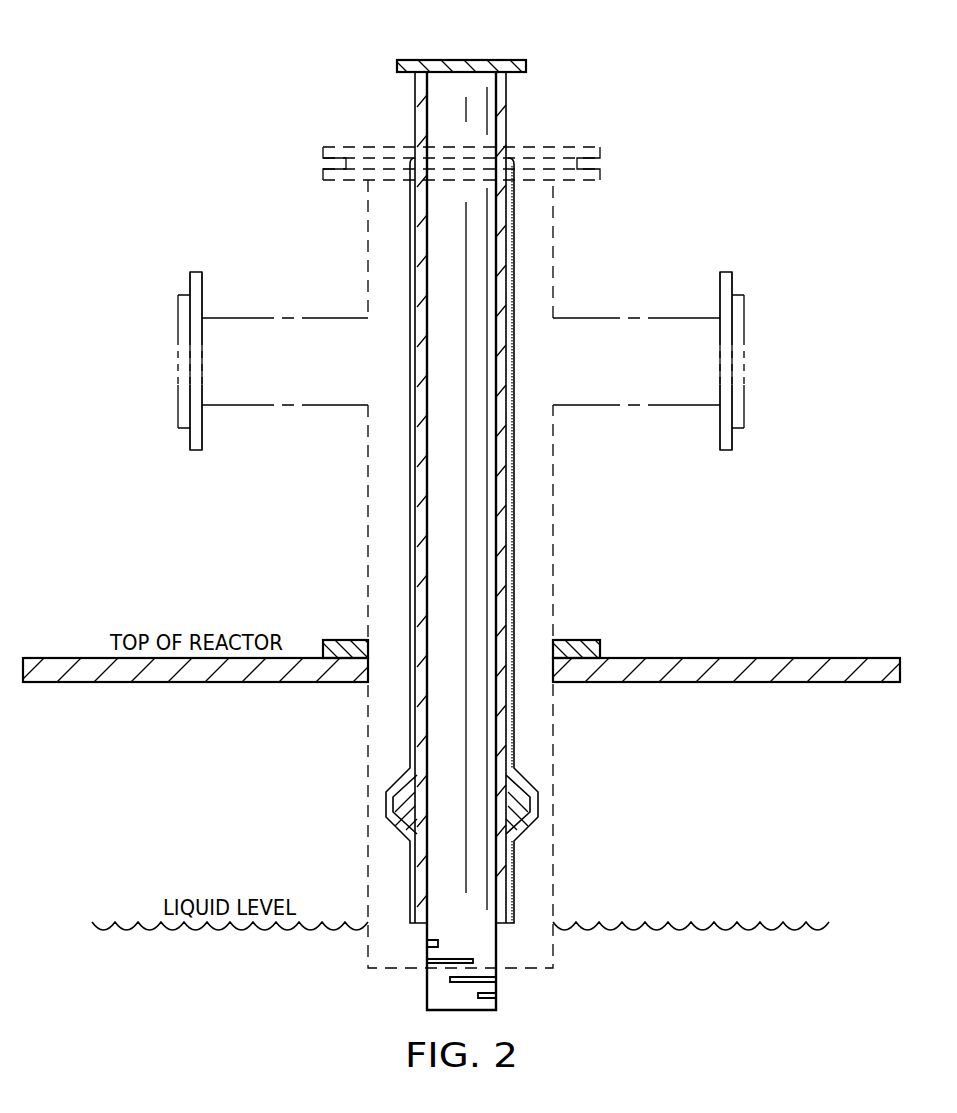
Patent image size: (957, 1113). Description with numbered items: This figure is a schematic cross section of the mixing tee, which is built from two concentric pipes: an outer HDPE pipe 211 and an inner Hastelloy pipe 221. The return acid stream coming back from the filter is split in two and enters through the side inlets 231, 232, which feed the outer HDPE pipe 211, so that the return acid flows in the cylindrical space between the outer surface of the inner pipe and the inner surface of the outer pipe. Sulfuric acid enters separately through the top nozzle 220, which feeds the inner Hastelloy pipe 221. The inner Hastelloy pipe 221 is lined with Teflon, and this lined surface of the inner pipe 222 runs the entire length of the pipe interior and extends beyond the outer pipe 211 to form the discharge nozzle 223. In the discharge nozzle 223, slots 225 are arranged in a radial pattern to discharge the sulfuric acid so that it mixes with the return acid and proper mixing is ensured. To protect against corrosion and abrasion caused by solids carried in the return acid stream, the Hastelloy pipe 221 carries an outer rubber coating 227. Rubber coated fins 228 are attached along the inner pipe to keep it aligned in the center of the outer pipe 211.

The outer HDPE pipe 211 is at (553, 295).
The top nozzle 220 is at (440, 58).
The inner Hastelloy pipe 221 is at (503, 517).
The surface of the inner pipe 222 is at (436, 508).
The discharge nozzle 223 is at (425, 985).
The slots 225 is at (508, 996).
The outer rubber coating 227 is at (510, 455).
The rubber coated fins 228 is at (398, 808).
The side inlet 231 is at (744, 318).
The side inlet 232 is at (178, 318).